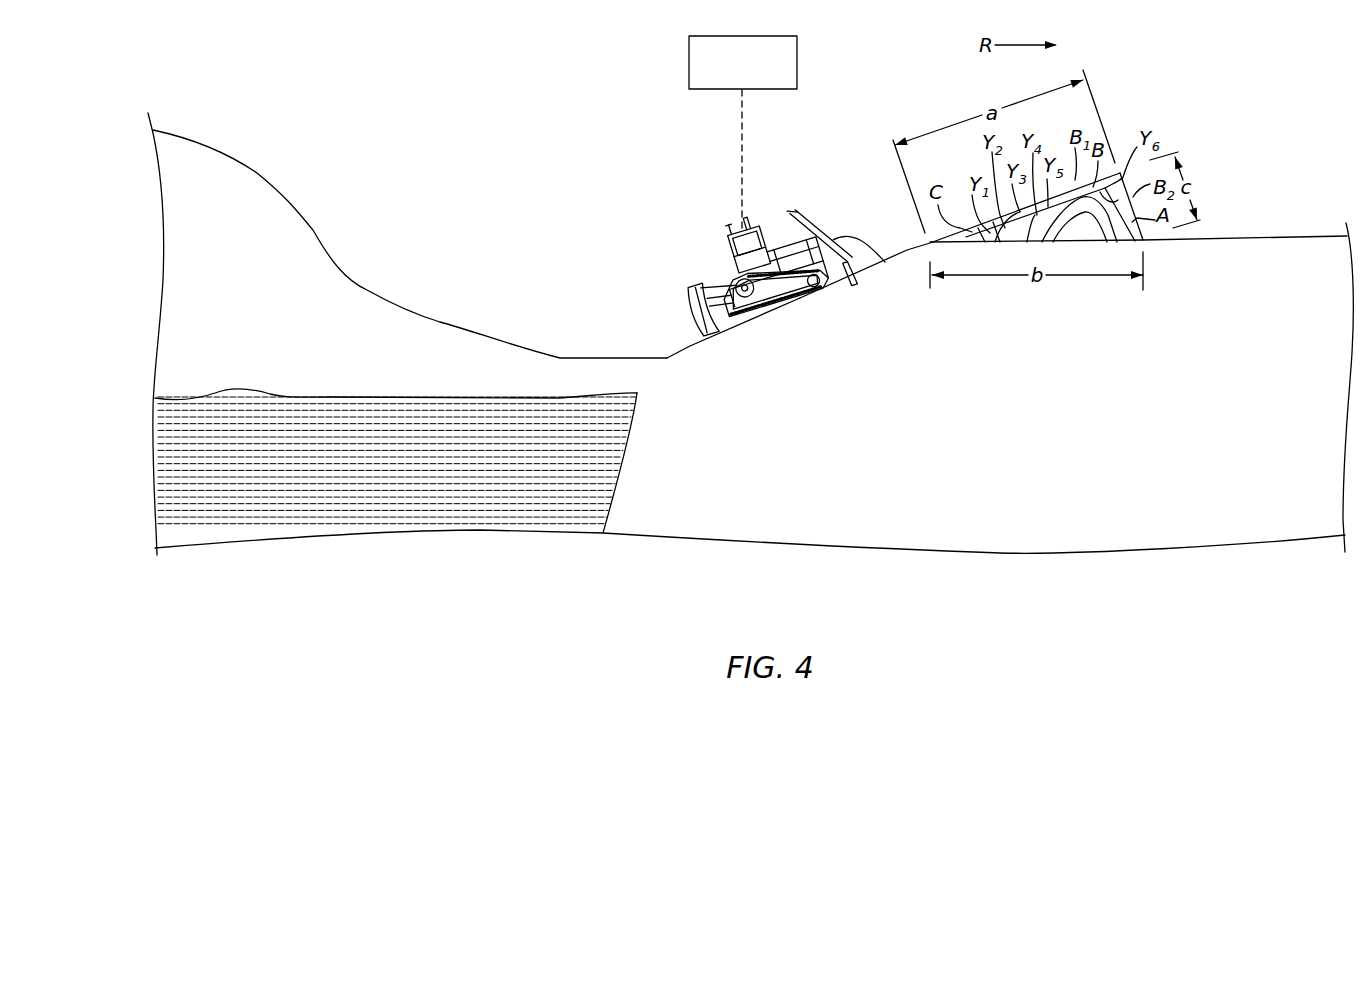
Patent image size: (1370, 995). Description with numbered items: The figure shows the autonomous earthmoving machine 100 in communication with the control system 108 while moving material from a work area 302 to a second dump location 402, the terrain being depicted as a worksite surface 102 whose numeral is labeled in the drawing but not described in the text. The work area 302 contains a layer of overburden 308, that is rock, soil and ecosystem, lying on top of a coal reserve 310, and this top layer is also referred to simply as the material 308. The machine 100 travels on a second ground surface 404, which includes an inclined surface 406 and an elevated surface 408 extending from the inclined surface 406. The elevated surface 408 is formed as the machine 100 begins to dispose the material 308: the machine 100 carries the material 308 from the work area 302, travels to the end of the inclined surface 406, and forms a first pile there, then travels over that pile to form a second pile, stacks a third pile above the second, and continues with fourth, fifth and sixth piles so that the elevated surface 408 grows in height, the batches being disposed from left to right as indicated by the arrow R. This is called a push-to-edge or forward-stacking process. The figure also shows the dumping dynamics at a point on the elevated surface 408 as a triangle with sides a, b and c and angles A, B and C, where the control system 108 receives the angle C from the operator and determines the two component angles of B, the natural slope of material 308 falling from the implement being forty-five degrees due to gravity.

The machine 100 is at (730, 237).
The worksite terrain surface 102 is at (233, 155).
The control system 108 is at (726, 75).
The work area 302 is at (607, 358).
The overburden 308 is at (466, 376).
The coal reserve 310 is at (410, 484).
The second dump location 402 is at (1293, 237).
The second ground surface 404 is at (888, 188).
The inclined surface 406 is at (689, 347).
The elevated surface 408 is at (1063, 194).